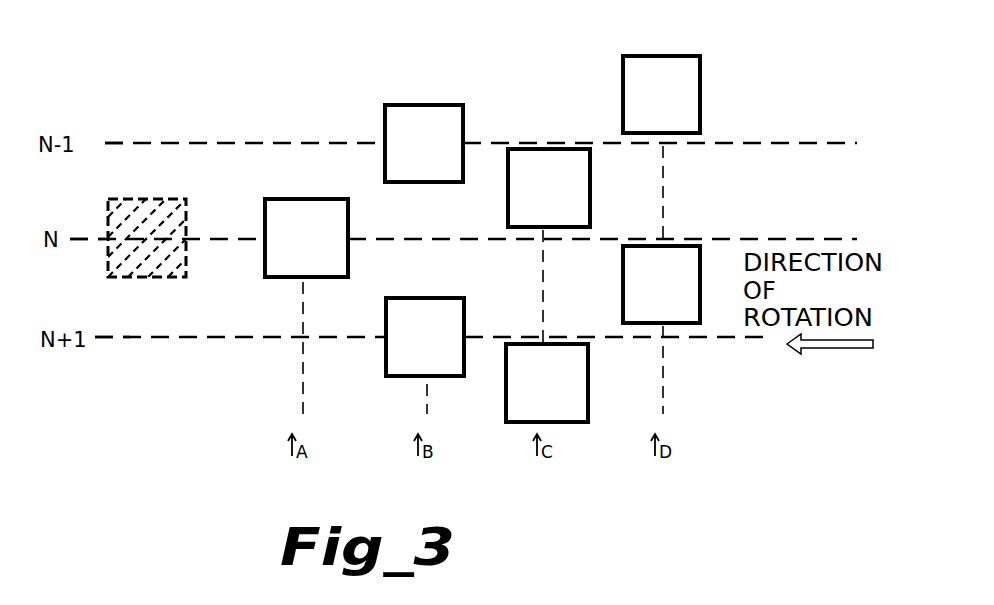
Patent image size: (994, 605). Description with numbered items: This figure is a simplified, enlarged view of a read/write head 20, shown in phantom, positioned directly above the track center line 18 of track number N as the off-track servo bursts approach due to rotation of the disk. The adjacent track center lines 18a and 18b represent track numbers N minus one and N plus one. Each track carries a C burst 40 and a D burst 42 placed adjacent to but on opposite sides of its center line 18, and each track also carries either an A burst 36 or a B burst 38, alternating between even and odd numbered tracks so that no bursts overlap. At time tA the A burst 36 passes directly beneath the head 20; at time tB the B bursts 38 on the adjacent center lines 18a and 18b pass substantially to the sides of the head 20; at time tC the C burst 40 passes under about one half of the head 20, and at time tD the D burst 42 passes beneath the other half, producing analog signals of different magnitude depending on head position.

The track center line 18 is at (737, 237).
The track center line 18a is at (133, 143).
The track center line 18b is at (182, 337).
The read/write head 20 is at (148, 198).
The A off-track burst 36 is at (302, 197).
The B off-track burst 38 is at (465, 58).
The C off-track burst 40 is at (563, 142).
The D off-track burst 42 is at (700, 68).